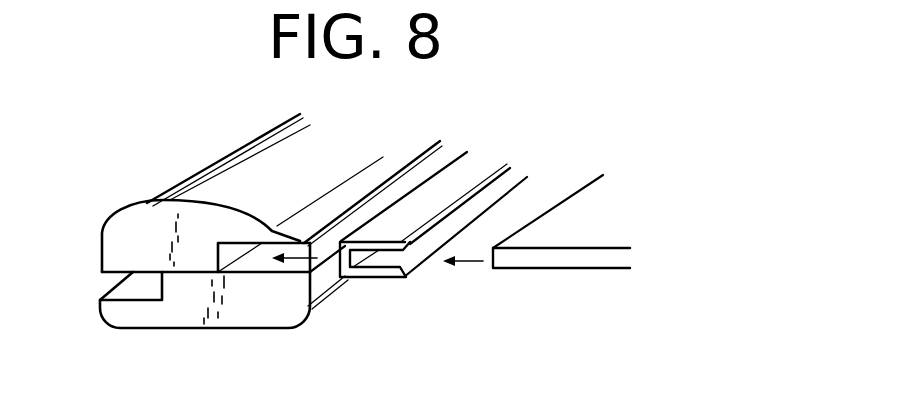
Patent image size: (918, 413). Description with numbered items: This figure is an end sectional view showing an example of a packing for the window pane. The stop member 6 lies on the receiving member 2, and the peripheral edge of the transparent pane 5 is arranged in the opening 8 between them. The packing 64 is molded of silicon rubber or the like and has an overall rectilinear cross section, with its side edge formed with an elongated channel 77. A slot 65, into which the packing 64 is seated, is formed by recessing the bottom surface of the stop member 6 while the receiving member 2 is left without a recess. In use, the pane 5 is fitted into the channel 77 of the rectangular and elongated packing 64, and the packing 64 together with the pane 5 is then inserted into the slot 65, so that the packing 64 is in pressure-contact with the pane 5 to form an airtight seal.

The receiving member 2 is at (237, 312).
The transparent pane 5 is at (556, 262).
The stop member 6 is at (121, 240).
The opening 8 is at (137, 288).
The packing 64 is at (387, 277).
The slot 65 is at (262, 260).
The elongated channel 77 is at (415, 254).